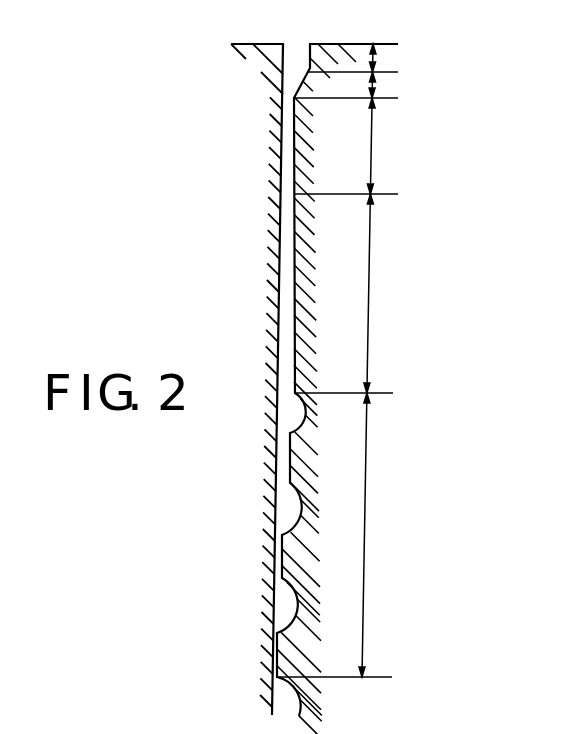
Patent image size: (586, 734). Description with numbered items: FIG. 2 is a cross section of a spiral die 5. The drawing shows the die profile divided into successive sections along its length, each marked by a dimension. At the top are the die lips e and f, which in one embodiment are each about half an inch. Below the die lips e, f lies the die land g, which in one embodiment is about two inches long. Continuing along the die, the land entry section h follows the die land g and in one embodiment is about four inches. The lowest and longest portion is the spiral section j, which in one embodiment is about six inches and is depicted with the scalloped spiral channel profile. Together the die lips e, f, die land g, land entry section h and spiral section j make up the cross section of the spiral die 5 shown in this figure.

The spiral die 5 is at (268, 44).
The die lip e is at (353, 58).
The die lip f is at (346, 85).
The die land g is at (346, 146).
The land entry section h is at (344, 293).
The spiral section j is at (334, 535).